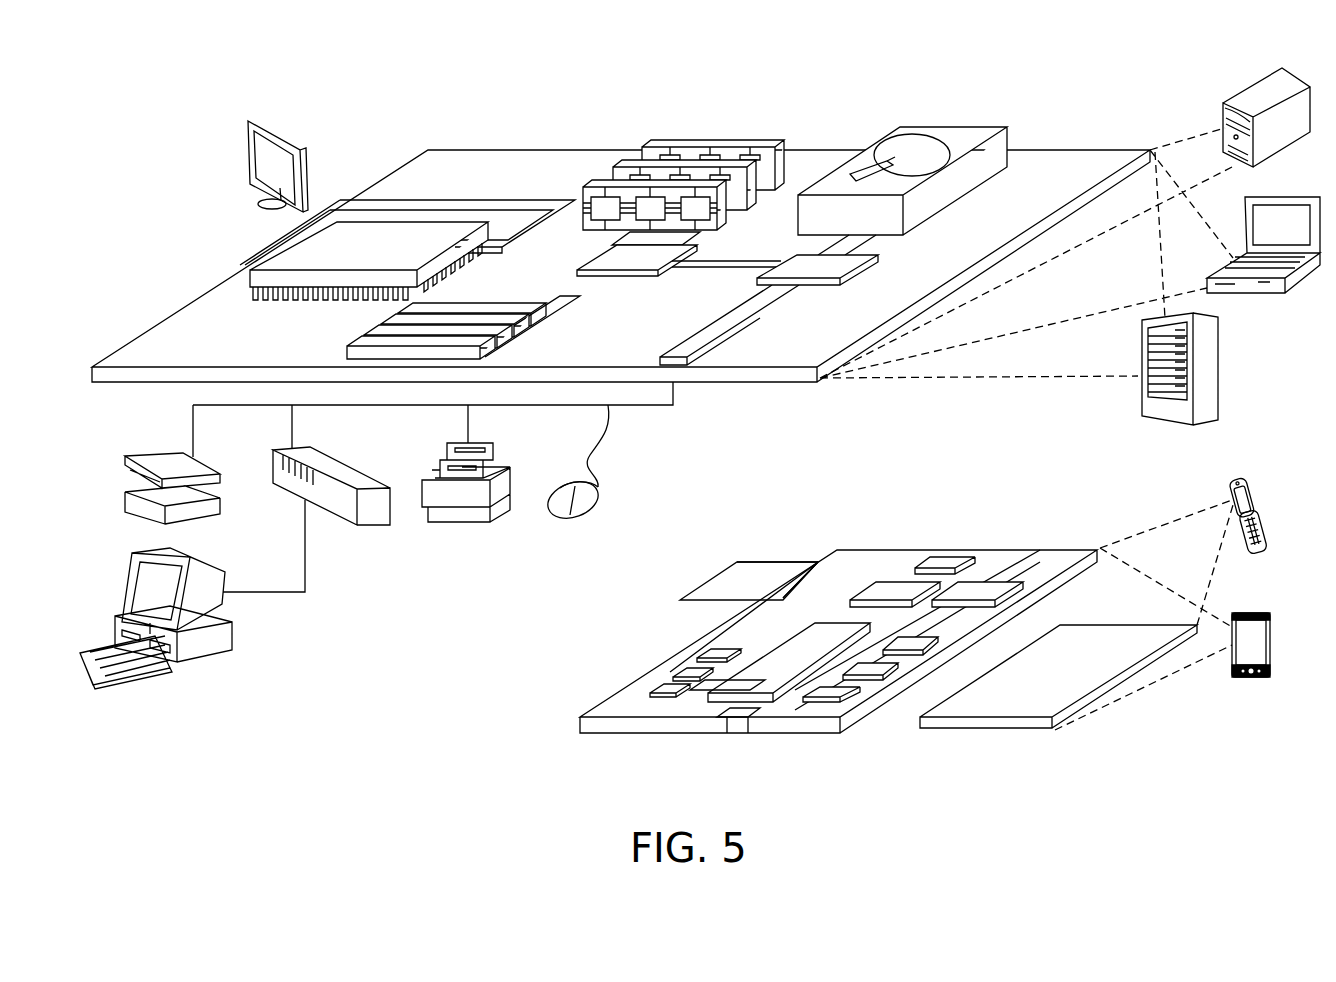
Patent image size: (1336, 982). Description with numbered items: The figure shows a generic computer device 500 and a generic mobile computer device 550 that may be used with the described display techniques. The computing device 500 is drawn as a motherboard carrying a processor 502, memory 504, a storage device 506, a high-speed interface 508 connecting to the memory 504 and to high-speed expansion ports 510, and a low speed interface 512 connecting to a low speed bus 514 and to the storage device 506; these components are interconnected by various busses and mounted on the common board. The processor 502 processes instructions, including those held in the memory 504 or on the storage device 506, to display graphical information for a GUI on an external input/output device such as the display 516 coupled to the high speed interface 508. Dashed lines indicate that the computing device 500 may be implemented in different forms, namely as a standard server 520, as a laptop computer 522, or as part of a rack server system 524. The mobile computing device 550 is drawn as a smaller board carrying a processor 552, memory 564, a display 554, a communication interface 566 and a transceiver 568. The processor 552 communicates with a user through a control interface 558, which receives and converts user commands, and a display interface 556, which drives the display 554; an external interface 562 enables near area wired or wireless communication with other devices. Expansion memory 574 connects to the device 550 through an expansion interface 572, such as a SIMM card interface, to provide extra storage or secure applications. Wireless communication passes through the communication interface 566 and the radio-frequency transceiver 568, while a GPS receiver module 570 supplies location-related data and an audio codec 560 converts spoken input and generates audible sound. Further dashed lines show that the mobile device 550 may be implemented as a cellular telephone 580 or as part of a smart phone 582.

The computing device 500 is at (380, 100).
The processor 502 is at (275, 258).
The memory 504 is at (718, 146).
The storage device 506 is at (944, 128).
The high-speed interface 508 is at (652, 270).
The high-speed expansion ports 510 is at (372, 334).
The low speed interface 512 is at (790, 264).
The low speed bus 514 is at (678, 356).
The display 516 is at (258, 122).
The standard server 520 is at (1247, 97).
The laptop computer 522 is at (1298, 197).
The rack server system 524 is at (1222, 368).
The mobile computer device 550 is at (540, 740).
The processor 552 is at (765, 668).
The display 554 is at (1098, 633).
The display interface 556 is at (843, 690).
The control interface 558 is at (880, 668).
The audio codec 560 is at (915, 640).
The external interface 562 is at (727, 725).
The memory 564 is at (680, 672).
The communication interface 566 is at (895, 585).
The transceiver 568 is at (985, 585).
The GPS receiver module 570 is at (942, 562).
The expansion interface 572 is at (818, 562).
The expansion memory 574 is at (738, 562).
The cellular telephone 580 is at (1240, 479).
The smart phone 582 is at (1245, 618).